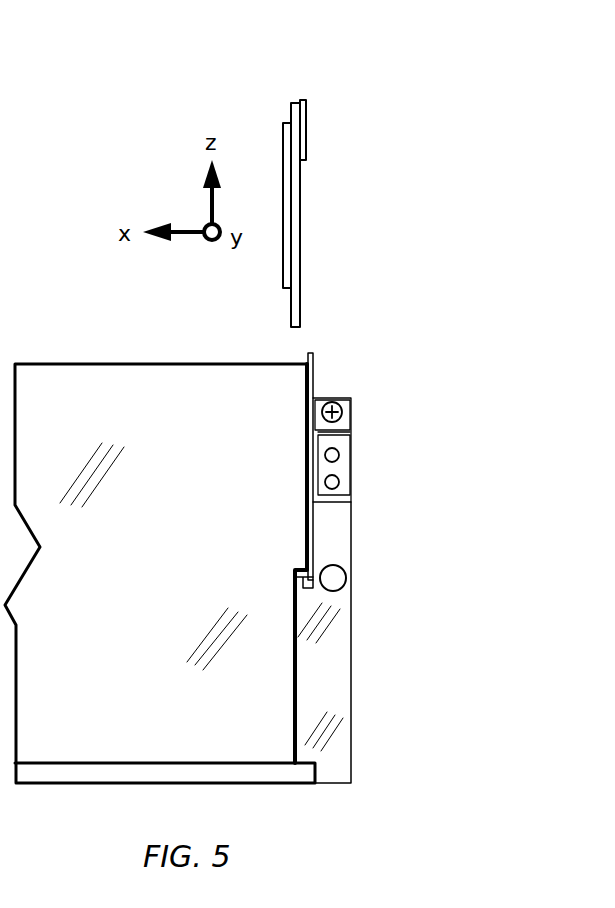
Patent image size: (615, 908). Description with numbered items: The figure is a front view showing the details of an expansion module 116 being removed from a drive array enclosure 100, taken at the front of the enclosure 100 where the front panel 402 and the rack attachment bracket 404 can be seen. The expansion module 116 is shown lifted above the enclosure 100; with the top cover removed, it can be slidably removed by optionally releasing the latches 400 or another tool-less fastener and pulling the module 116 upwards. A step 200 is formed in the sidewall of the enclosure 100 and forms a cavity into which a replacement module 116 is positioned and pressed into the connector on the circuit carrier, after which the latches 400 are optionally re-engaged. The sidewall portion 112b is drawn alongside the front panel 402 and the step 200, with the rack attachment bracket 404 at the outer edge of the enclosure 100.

The enclosure 100 is at (90, 204).
The latches 400 is at (305, 100).
The expansion module 116 is at (299, 245).
The front panel 402 is at (63, 377).
The side member 112b is at (314, 378).
The step 200 is at (303, 588).
The rack attachment bracket 404 is at (338, 775).